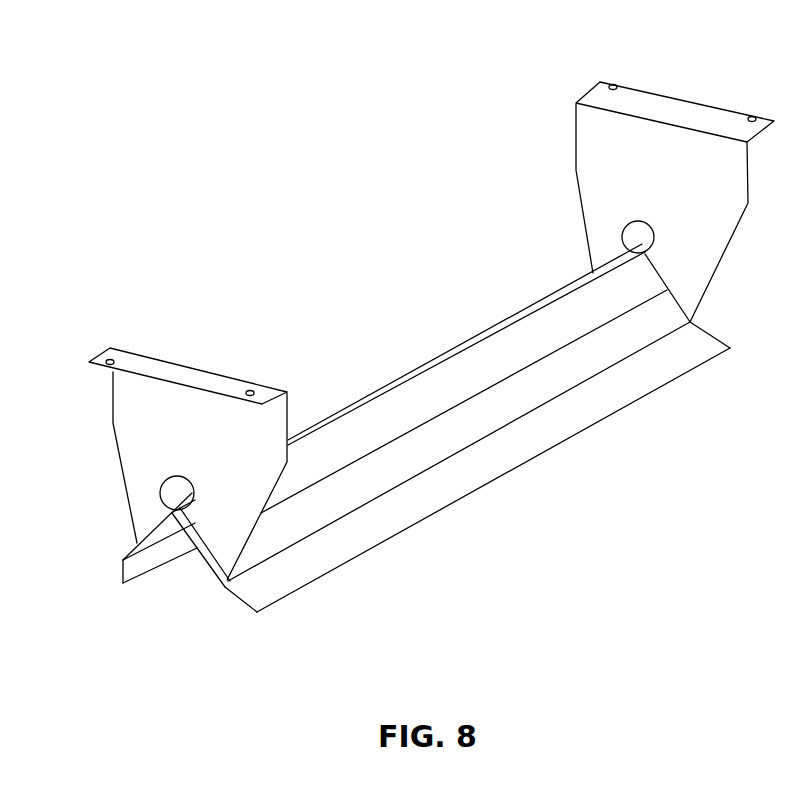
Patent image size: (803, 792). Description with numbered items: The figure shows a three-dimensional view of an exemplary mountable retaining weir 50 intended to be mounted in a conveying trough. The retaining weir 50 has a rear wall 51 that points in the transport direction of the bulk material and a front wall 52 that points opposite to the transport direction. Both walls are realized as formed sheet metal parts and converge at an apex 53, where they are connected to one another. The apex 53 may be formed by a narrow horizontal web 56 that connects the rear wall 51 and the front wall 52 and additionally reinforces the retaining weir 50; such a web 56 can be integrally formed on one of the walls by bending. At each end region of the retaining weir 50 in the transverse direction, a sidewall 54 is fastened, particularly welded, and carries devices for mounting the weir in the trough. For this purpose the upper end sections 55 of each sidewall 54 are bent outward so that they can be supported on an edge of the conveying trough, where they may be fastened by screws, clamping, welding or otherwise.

The retaining weir 50 is at (246, 150).
The rear wall 51 is at (330, 505).
The front wall 52 is at (122, 573).
The apex 53 is at (475, 340).
The sidewall 54 is at (585, 152).
The upper end sections 55 is at (608, 93).
The horizontal web 56 is at (413, 373).